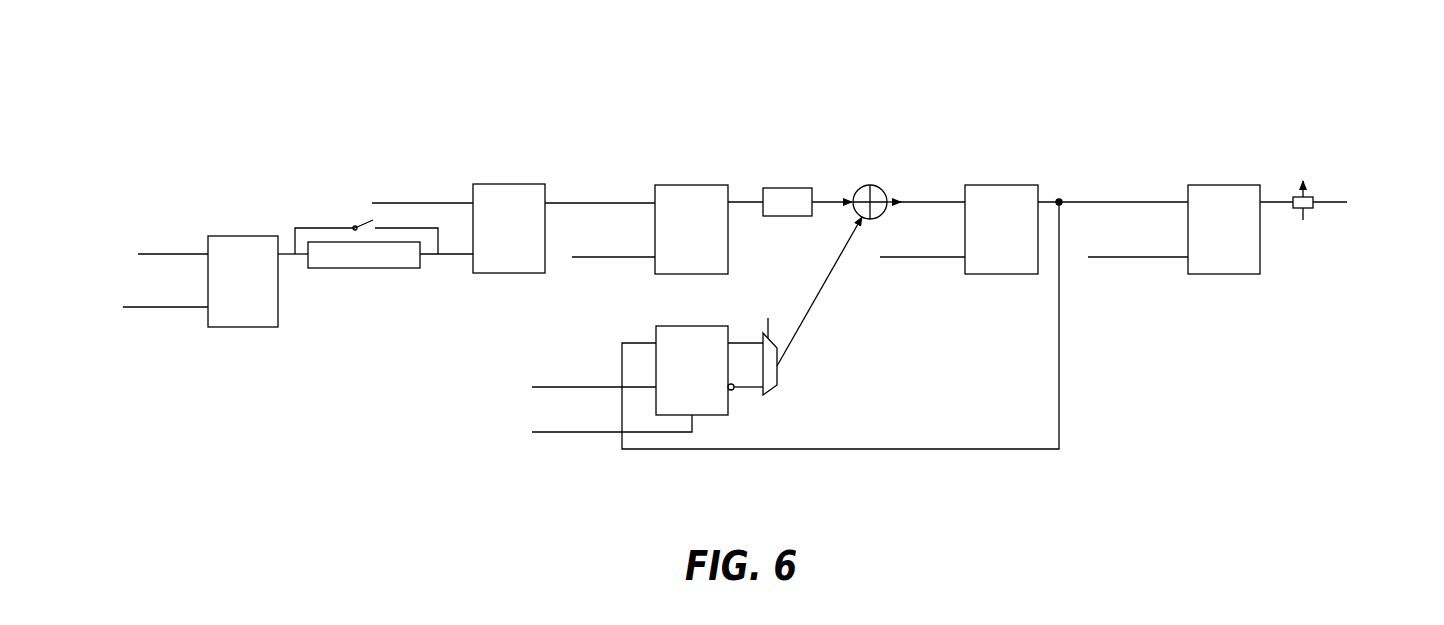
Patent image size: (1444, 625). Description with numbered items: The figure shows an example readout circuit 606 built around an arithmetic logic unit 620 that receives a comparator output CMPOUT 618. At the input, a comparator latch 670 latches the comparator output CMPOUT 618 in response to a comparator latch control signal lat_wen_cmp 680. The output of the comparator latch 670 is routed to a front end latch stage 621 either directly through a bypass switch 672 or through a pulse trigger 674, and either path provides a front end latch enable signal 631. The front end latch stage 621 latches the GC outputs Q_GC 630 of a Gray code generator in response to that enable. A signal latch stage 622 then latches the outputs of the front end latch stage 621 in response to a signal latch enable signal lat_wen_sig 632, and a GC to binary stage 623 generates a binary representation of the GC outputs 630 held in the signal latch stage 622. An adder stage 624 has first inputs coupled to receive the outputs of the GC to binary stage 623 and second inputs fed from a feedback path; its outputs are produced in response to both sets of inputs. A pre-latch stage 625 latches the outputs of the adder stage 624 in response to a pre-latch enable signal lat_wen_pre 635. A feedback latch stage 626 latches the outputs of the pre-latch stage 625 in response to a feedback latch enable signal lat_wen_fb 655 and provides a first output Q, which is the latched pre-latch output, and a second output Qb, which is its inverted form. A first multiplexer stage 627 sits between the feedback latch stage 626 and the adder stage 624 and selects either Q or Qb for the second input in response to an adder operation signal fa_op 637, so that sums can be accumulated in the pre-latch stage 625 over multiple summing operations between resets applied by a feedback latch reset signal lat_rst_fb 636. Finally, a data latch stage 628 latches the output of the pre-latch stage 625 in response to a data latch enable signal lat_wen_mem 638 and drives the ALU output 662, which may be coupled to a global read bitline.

The readout circuit 606 is at (247, 69).
The arithmetic logic unit (ALU) 620 is at (426, 42).
The comparator output CMPOUT 618 is at (85, 242).
The comparator latch 670 is at (238, 202).
The comparator latch control signal lat_wen_cmp 680 is at (165, 307).
The bypass switch 672 is at (368, 221).
The pulse trigger 674 is at (365, 268).
The front end latch enable signal 631 is at (445, 257).
The GC outputs Q_GC 630 is at (437, 175).
The front end latch stage 621 is at (510, 153).
The signal latch enable signal lat_wen_sig 632 is at (615, 258).
The signal latch stage 622 is at (670, 153).
The GC to binary stage 623 is at (788, 187).
The adder stage 624 is at (865, 187).
The pre-latch enable signal lat_wen_pre 635 is at (922, 258).
The pre-latch stage 625 is at (978, 155).
The data latch enable signal lat_wen_mem 638 is at (1138, 258).
The data latch stage 628 is at (1205, 152).
The ALU output 662 is at (1330, 205).
The feedback latch stage 626 is at (715, 415).
The feedback latch enable signal lat_wen_fb 655 is at (562, 362).
The feedback latch reset signal lat_rst_fb 636 is at (577, 433).
The first multiplexer stage 627 is at (778, 375).
The adder operation signal fa_op 637 is at (773, 282).